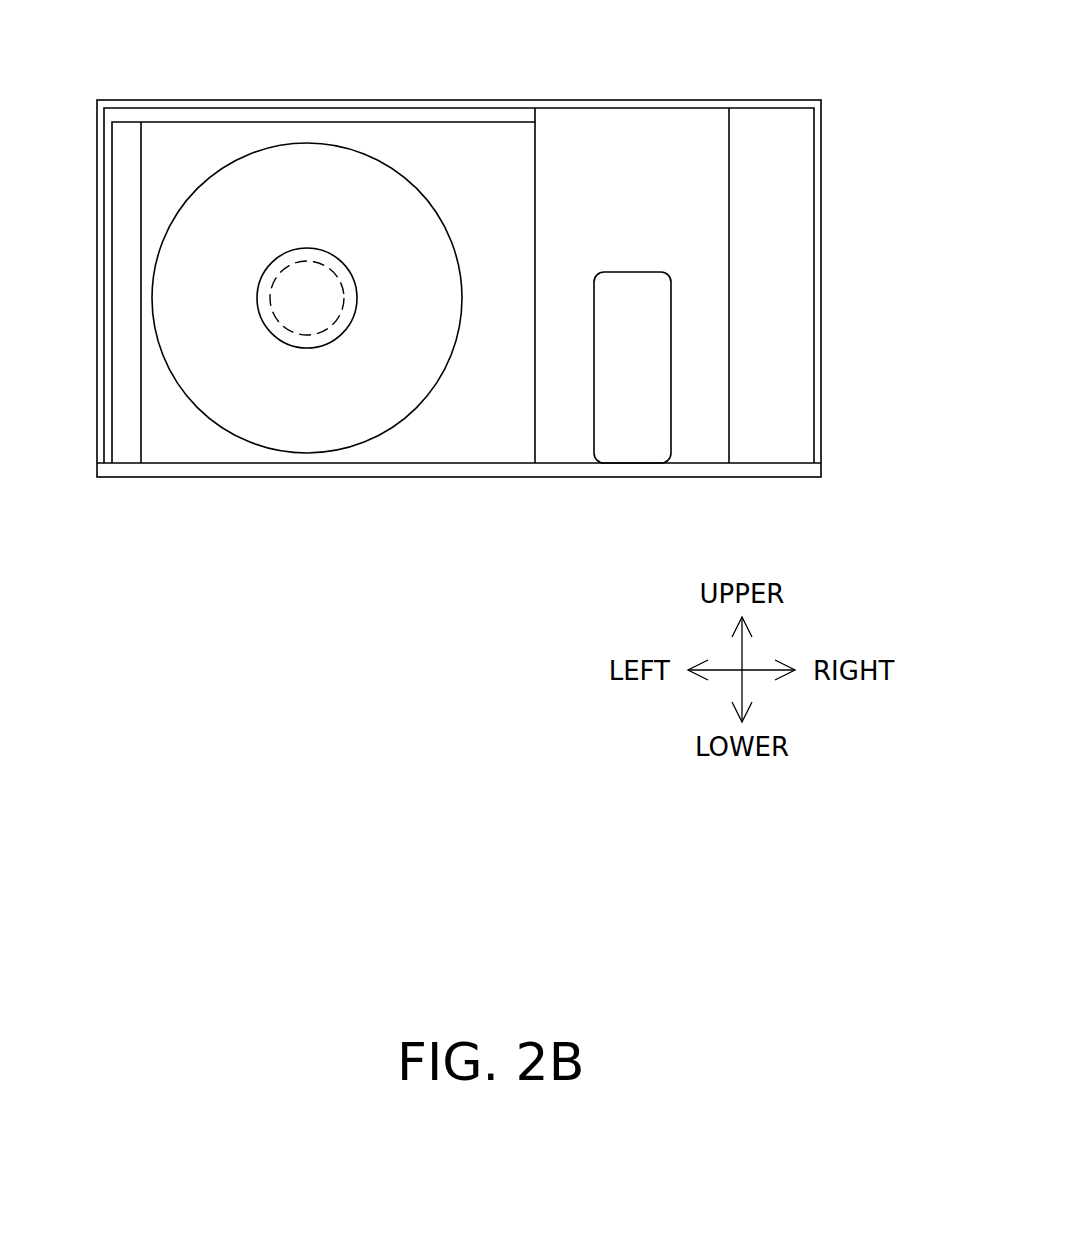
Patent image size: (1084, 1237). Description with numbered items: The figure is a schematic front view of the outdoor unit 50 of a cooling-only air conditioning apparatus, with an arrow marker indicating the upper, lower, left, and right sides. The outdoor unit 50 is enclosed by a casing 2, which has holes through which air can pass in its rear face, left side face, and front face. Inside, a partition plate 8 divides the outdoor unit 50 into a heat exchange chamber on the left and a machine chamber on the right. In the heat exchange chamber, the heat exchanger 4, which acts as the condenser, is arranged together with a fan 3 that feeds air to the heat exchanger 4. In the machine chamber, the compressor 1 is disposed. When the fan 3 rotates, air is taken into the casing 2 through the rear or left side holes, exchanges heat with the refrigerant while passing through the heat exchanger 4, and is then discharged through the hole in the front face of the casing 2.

The outdoor unit 50 is at (869, 91).
The casing 2 is at (522, 100).
The heat exchanger 4 is at (483, 160).
The fan 3 is at (230, 400).
The partition plate 8 is at (690, 153).
The compressor 1 is at (635, 285).